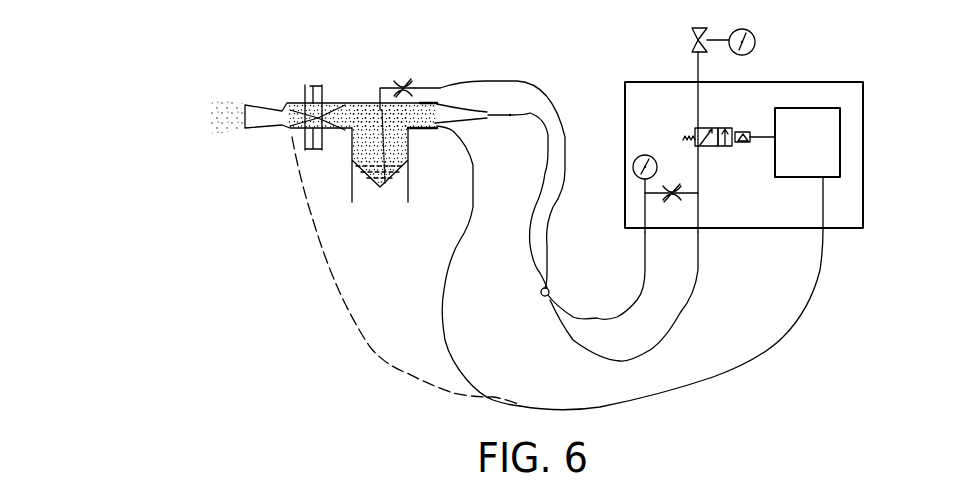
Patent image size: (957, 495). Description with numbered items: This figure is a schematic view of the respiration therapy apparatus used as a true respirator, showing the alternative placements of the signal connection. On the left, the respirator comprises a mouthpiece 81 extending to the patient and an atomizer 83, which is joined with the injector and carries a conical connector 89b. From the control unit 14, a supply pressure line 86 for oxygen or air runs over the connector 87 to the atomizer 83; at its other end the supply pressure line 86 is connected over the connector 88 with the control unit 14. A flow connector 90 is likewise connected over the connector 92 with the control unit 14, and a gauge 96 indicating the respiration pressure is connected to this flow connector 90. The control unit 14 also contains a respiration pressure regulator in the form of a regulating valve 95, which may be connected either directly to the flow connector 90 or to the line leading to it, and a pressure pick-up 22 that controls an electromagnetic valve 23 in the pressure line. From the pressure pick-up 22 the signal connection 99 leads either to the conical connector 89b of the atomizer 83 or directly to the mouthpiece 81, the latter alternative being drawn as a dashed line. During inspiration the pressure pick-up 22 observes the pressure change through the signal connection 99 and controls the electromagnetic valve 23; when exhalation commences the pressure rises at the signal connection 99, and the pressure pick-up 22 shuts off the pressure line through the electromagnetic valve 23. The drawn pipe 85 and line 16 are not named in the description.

The mouthpiece 81 is at (256, 131).
The atomizer 83 is at (357, 107).
The air supply pipe with throttle 85 is at (403, 80).
The connector 87 is at (440, 86).
The supply pressure line 86 is at (517, 81).
The conical connector 89b is at (460, 126).
The signal connection 99 is at (620, 407).
The control unit 14 is at (803, 82).
The air supply line with shut-off valve and gauge 16 is at (698, 95).
The electromagnetic valve 23 is at (732, 150).
The pressure pick-up 22 is at (837, 143).
The regulating valve 95 is at (668, 182).
The gauge 96 is at (633, 163).
The connector 92 is at (643, 235).
The connector 88 is at (700, 233).
The flow connector 90 is at (643, 275).